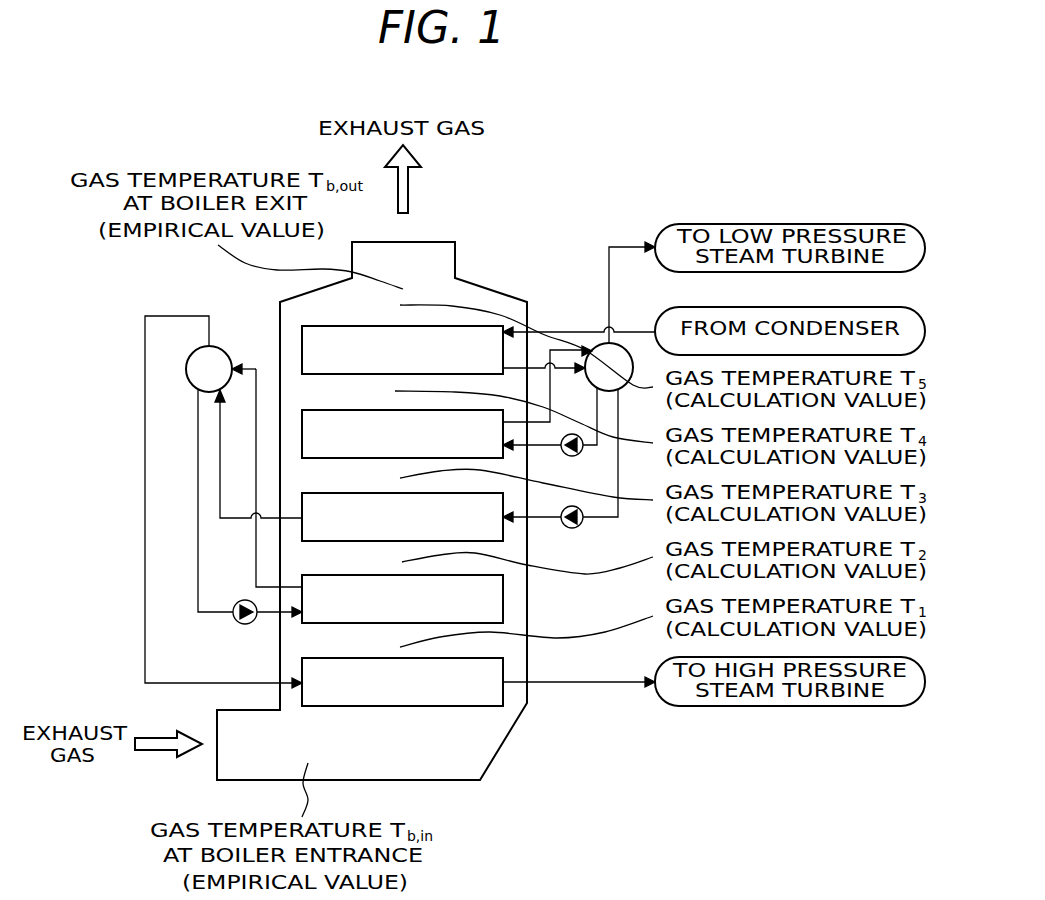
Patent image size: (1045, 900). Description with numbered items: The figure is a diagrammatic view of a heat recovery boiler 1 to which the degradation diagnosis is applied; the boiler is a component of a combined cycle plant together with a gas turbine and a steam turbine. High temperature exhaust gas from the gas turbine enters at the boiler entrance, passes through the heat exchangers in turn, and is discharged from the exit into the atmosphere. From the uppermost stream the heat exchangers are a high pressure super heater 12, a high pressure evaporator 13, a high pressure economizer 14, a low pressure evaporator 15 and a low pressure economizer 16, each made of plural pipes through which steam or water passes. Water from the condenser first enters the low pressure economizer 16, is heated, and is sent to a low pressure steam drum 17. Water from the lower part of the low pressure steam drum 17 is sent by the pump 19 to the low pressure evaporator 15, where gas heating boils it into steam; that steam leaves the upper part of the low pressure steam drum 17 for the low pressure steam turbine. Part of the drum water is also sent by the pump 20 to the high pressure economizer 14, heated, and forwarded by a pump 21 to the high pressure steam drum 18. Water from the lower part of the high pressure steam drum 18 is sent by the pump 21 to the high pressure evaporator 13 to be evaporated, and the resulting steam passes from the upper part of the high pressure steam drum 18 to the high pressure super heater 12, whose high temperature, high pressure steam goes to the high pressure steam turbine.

The heat recovery boiler 1 is at (473, 285).
The high pressure super heater 12 is at (352, 658).
The high pressure evaporator 13 is at (352, 575).
The high pressure economizer 14 is at (352, 493).
The low pressure evaporator 15 is at (352, 410).
The low pressure economizer 16 is at (352, 326).
The low pressure steam drum 17 is at (628, 345).
The high pressure steam drum 18 is at (220, 353).
The pump 19 is at (575, 456).
The pump 20 is at (575, 528).
The pump 21 is at (244, 624).